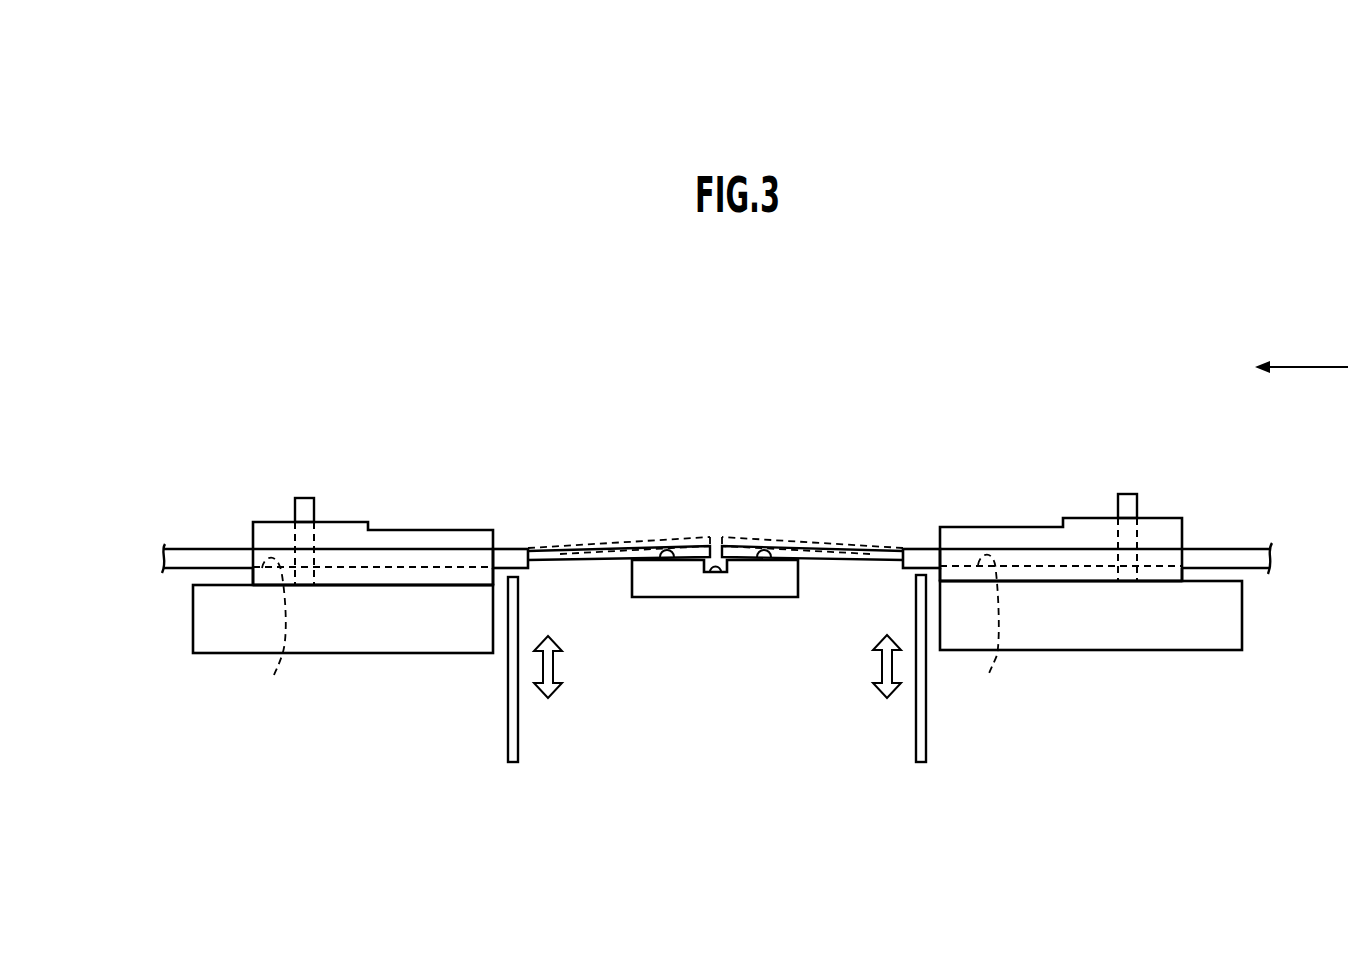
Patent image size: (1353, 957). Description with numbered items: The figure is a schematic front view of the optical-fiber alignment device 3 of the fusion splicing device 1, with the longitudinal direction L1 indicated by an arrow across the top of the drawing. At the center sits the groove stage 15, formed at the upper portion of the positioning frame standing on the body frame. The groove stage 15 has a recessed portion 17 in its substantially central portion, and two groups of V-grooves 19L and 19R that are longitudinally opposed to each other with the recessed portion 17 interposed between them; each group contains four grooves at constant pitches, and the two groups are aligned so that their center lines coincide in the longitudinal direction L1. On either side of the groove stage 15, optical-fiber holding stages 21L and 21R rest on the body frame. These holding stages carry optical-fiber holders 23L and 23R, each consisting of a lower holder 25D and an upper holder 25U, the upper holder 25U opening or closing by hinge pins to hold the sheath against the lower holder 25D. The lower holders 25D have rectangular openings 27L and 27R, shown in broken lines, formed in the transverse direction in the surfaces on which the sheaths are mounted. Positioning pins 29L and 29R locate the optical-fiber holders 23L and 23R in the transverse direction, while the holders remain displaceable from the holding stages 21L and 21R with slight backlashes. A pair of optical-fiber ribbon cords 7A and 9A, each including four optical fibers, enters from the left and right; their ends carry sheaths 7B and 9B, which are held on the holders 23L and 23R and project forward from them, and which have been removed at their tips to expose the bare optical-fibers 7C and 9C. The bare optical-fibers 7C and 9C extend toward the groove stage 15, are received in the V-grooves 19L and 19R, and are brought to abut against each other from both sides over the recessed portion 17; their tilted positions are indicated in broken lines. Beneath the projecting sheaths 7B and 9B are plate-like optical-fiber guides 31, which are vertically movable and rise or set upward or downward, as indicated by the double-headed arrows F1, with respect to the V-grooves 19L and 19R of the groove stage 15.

The fusion splicing device 1 is at (836, 464).
The optical-fiber alignment device 3 is at (689, 499).
The optical-fiber ribbon cord 7A is at (220, 545).
The sheath 7B is at (508, 553).
The bare optical-fibers 7C is at (645, 548).
The optical-fiber ribbon cord 9A is at (1209, 545).
The sheath 9B is at (918, 549).
The bare optical-fibers 9C is at (787, 548).
The groove stage 15 is at (682, 587).
The recessed portion 17 is at (718, 575).
The V-grooves 19L is at (668, 553).
The V-grooves 19R is at (764, 553).
The optical-fiber holding stage 21L is at (390, 620).
The optical-fiber holding stage 21R is at (1215, 632).
The optical-fiber holder 23L is at (345, 592).
The optical-fiber holder 23R is at (1052, 590).
The upper holder 25U is at (410, 537).
The lower holder 25D is at (456, 575).
The rectangular opening 27L is at (271, 637).
The rectangular opening 27R is at (987, 632).
The positioning pin 29L is at (303, 503).
The positioning pin 29R is at (1124, 495).
The optical-fiber guide 31 is at (513, 737).
The force direction F1 is at (717, 666).
The longitudinal direction L1 is at (1301, 350).